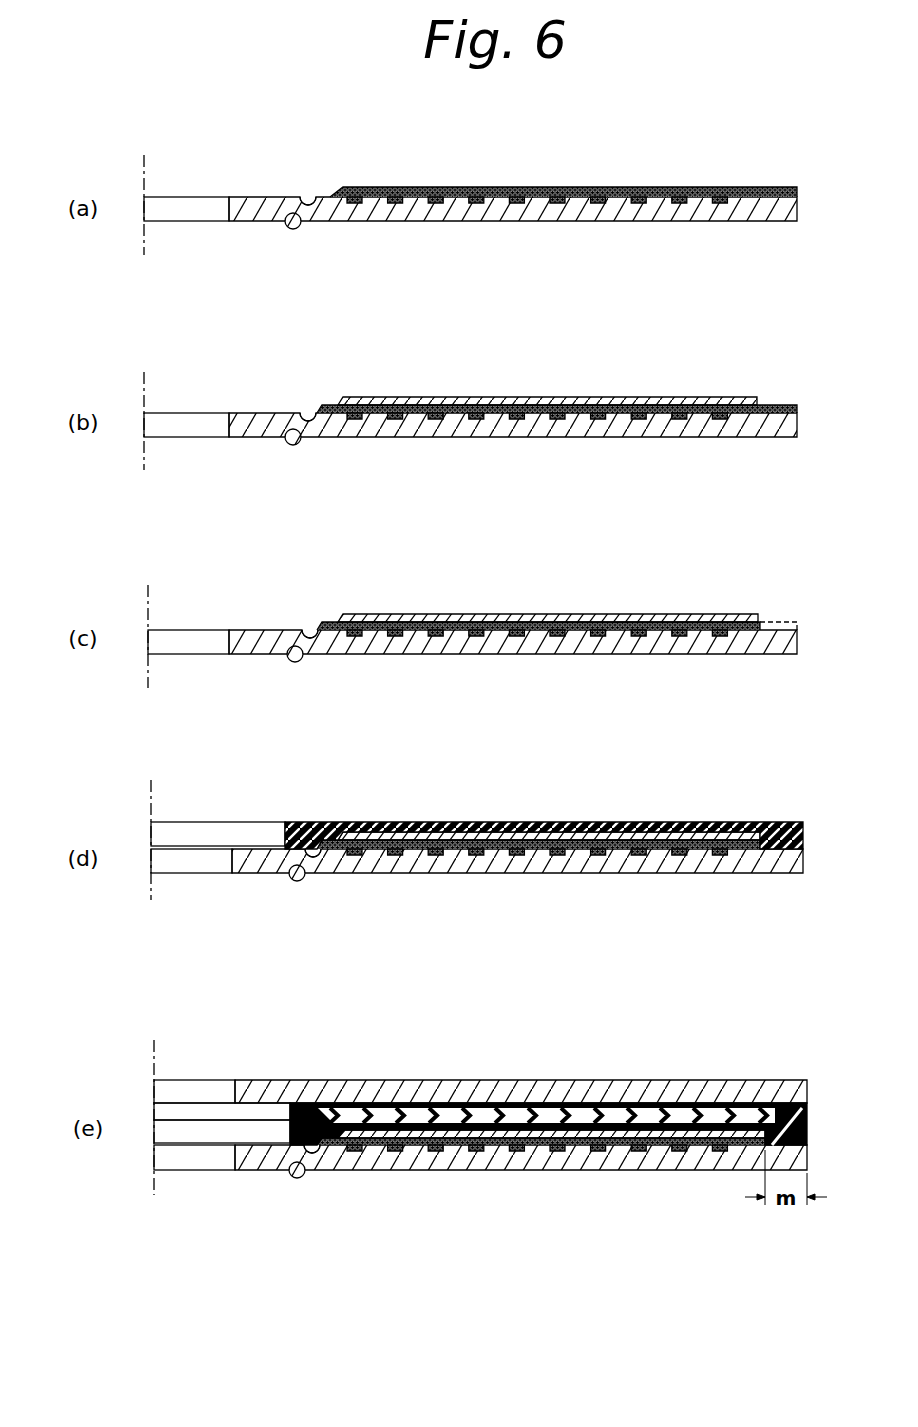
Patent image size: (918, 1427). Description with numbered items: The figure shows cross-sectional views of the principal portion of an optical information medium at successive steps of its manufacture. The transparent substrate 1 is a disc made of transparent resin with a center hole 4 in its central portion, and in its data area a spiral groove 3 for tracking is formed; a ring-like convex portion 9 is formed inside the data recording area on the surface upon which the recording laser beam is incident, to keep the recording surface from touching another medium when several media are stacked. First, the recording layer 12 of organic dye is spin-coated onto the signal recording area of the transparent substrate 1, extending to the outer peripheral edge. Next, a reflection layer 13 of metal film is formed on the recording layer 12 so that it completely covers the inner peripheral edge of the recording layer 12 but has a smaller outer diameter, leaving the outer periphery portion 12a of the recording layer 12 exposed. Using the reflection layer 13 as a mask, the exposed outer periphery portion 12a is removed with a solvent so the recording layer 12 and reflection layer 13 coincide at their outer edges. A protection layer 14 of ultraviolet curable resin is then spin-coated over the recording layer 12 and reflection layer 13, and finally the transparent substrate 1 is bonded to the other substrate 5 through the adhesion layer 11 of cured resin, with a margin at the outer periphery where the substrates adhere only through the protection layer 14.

The transparent substrate 1 is at (462, 212).
The groove for tracking 3 is at (644, 205).
The center hole 4 is at (177, 210).
The substrate 5 is at (641, 1090).
The ring-like convex portion 9 is at (287, 230).
The adhesion layer 11 is at (528, 1112).
The recording layer 12 is at (398, 195).
The outer periphery portion of the recording layer 12a is at (771, 409).
The reflection layer 13 is at (680, 400).
The protection layer 14 is at (600, 824).